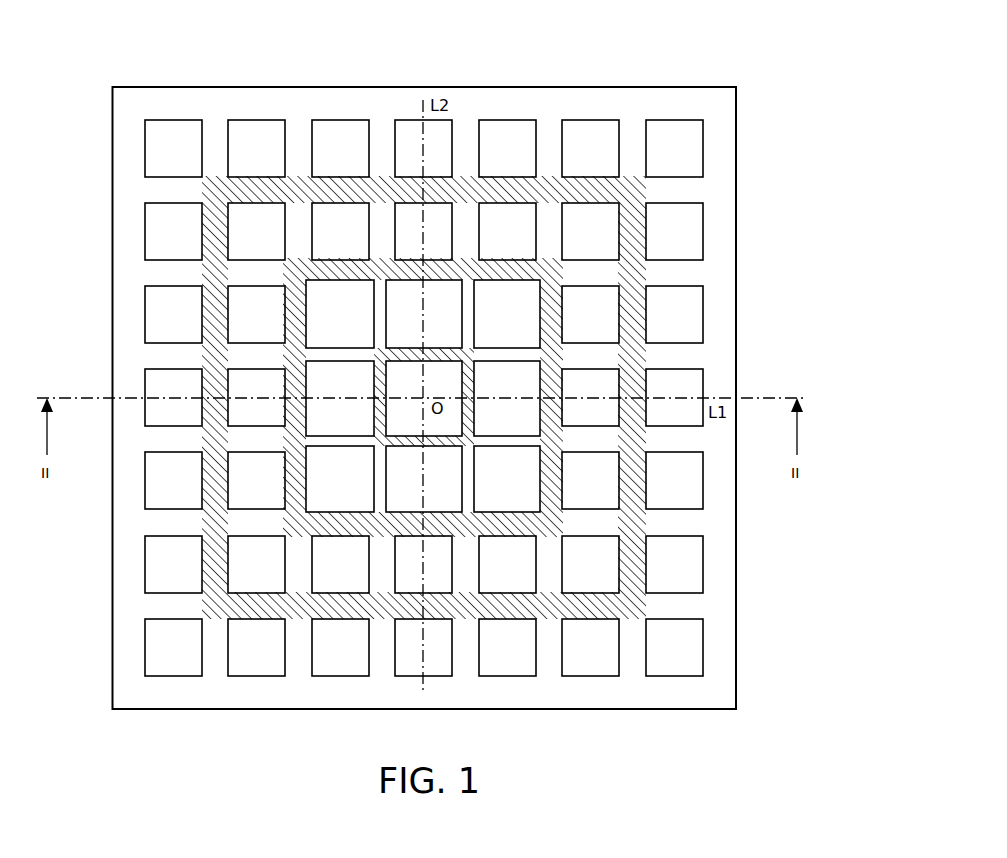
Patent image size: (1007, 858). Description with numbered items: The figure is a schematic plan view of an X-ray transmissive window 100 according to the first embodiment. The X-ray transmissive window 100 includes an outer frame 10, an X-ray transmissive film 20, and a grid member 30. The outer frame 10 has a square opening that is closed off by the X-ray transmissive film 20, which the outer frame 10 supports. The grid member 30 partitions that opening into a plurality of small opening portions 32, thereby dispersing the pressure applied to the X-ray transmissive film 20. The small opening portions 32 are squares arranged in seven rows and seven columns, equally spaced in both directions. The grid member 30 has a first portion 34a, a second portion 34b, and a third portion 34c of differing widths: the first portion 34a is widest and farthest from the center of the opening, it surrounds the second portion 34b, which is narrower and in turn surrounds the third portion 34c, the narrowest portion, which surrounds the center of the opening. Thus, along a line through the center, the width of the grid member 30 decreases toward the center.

The X-ray transmissive window 100 is at (749, 49).
The outer frame 10 is at (725, 147).
The X-ray transmissive film 20 is at (688, 222).
The grid member 30 is at (682, 272).
The small opening portions 32 is at (176, 106).
The first portion 34a is at (633, 218).
The second portion 34b is at (552, 268).
The third portion 34c is at (470, 350).